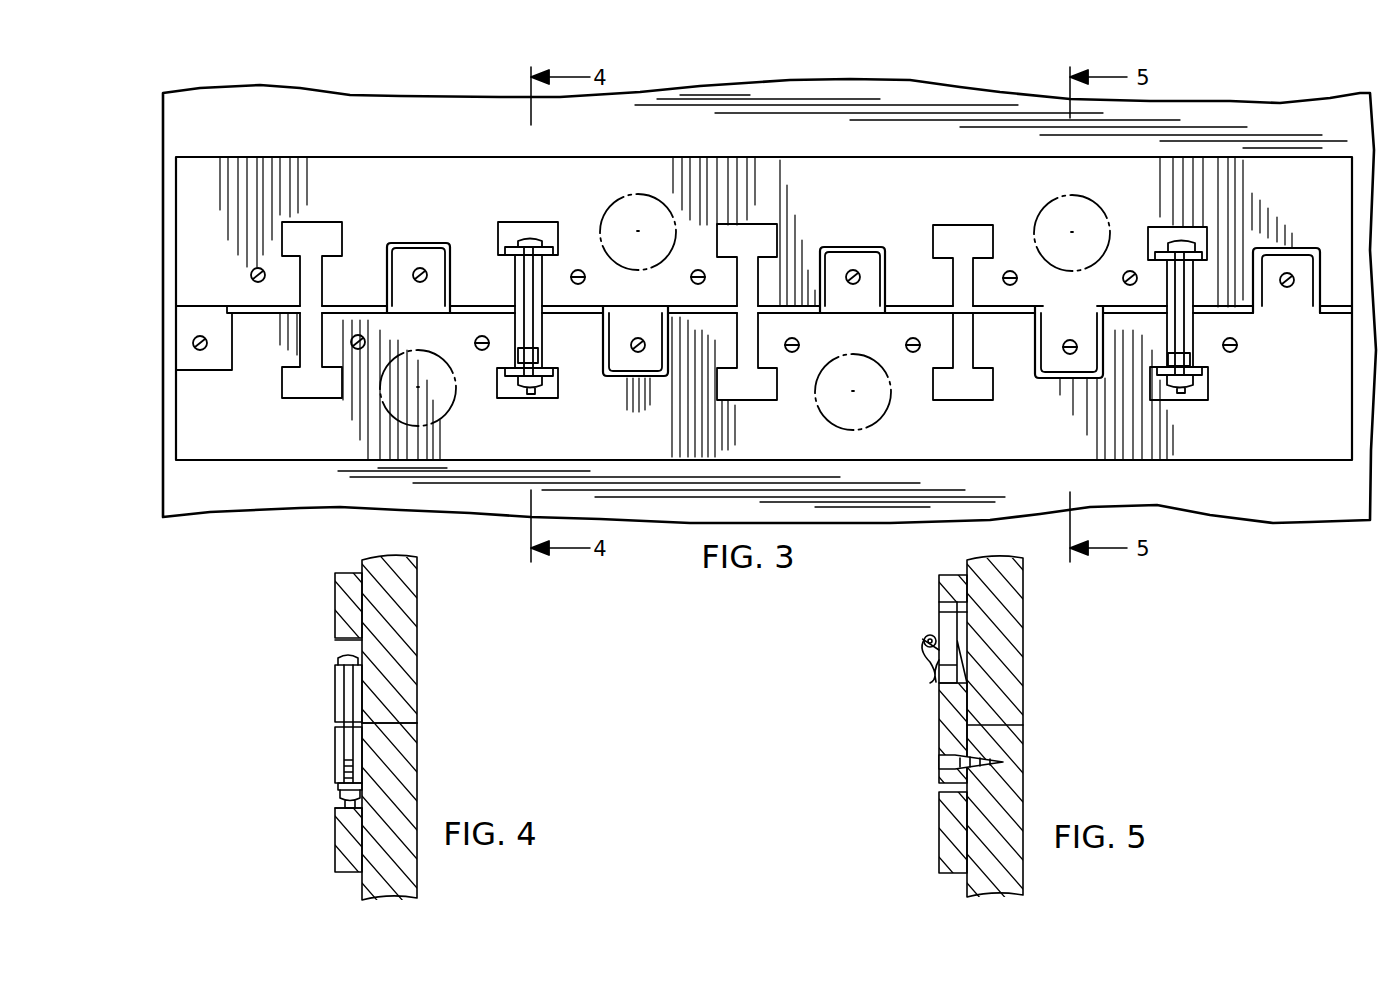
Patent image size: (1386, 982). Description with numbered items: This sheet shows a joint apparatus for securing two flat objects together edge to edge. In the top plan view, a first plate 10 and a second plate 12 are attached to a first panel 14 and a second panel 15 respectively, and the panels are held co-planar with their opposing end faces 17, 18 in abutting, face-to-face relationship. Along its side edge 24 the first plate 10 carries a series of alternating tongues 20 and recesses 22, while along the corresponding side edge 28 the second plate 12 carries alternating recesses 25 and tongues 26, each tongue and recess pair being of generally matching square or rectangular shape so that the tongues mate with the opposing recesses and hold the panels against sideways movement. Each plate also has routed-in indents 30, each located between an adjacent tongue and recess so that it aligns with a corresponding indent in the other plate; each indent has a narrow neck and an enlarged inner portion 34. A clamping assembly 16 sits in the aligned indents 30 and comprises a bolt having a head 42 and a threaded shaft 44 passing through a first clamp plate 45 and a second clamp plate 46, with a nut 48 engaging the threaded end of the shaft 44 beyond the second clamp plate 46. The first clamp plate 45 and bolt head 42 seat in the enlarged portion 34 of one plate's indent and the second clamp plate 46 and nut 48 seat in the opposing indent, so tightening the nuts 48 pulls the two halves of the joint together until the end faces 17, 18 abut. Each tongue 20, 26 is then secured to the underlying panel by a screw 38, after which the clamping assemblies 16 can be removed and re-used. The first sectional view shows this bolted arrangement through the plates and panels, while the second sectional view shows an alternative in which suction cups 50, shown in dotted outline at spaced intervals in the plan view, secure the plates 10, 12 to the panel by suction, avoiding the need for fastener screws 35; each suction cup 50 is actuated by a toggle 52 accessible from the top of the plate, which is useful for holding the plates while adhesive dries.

In FIG. 3, the first plate 10 is at (305, 153).
In FIG. 4, the first plate 10 is at (345, 593).
In FIG. 5, the first plate 10 is at (945, 590).
In FIG. 3, the second plate 12 is at (305, 467).
In FIG. 4, the second plate 12 is at (335, 852).
In FIG. 5, the second plate 12 is at (943, 835).
In FIG. 3, the first panel 14 is at (465, 110).
In FIG. 4, the first panel 14 is at (405, 643).
In FIG. 5, the first panel 14 is at (1023, 643).
In FIG. 3, the second panel 15 is at (360, 497).
In FIG. 4, the second panel 15 is at (410, 786).
In FIG. 5, the second panel 15 is at (1012, 785).
In FIG. 3, the clamping assembly 16 is at (543, 280).
In FIG. 4, the clamping assembly 16 is at (318, 703).
In FIG. 4, the end face of first panel 17 is at (385, 735).
In FIG. 4, the end face of second panel 18 is at (395, 723).
In FIG. 3, the tongue 20 is at (185, 360).
In FIG. 5, the tongue 20 is at (950, 735).
In FIG. 3, the recess 22 is at (423, 242).
In FIG. 3, the side edge of first plate 24 is at (808, 310).
In FIG. 3, the recess 25 is at (232, 323).
In FIG. 3, the tongue 26 is at (400, 260).
In FIG. 3, the side edge of second plate 28 is at (470, 310).
In FIG. 3, the indent 30 is at (562, 390).
In FIG. 4, the enlarged inner portion 34 is at (345, 640).
In FIG. 3, the fastener screws 35 is at (592, 281).
In FIG. 3, the screw 38 is at (427, 273).
In FIG. 5, the screw 38 is at (950, 765).
In FIG. 3, the bolt head 42 is at (535, 242).
In FIG. 4, the bolt head 42 is at (340, 657).
In FIG. 3, the threaded shaft 44 is at (532, 358).
In FIG. 4, the threaded shaft 44 is at (348, 765).
In FIG. 3, the first clamp plate 45 is at (510, 242).
In FIG. 4, the first clamp plate 45 is at (338, 668).
In FIG. 3, the second clamp plate 46 is at (508, 382).
In FIG. 4, the second clamp plate 46 is at (340, 781).
In FIG. 3, the nut 48 is at (538, 382).
In FIG. 4, the nut 48 is at (345, 793).
In FIG. 3, the suction cup 50 is at (1083, 195).
In FIG. 5, the suction cup 50 is at (965, 635).
In FIG. 5, the toggle 52 is at (928, 665).